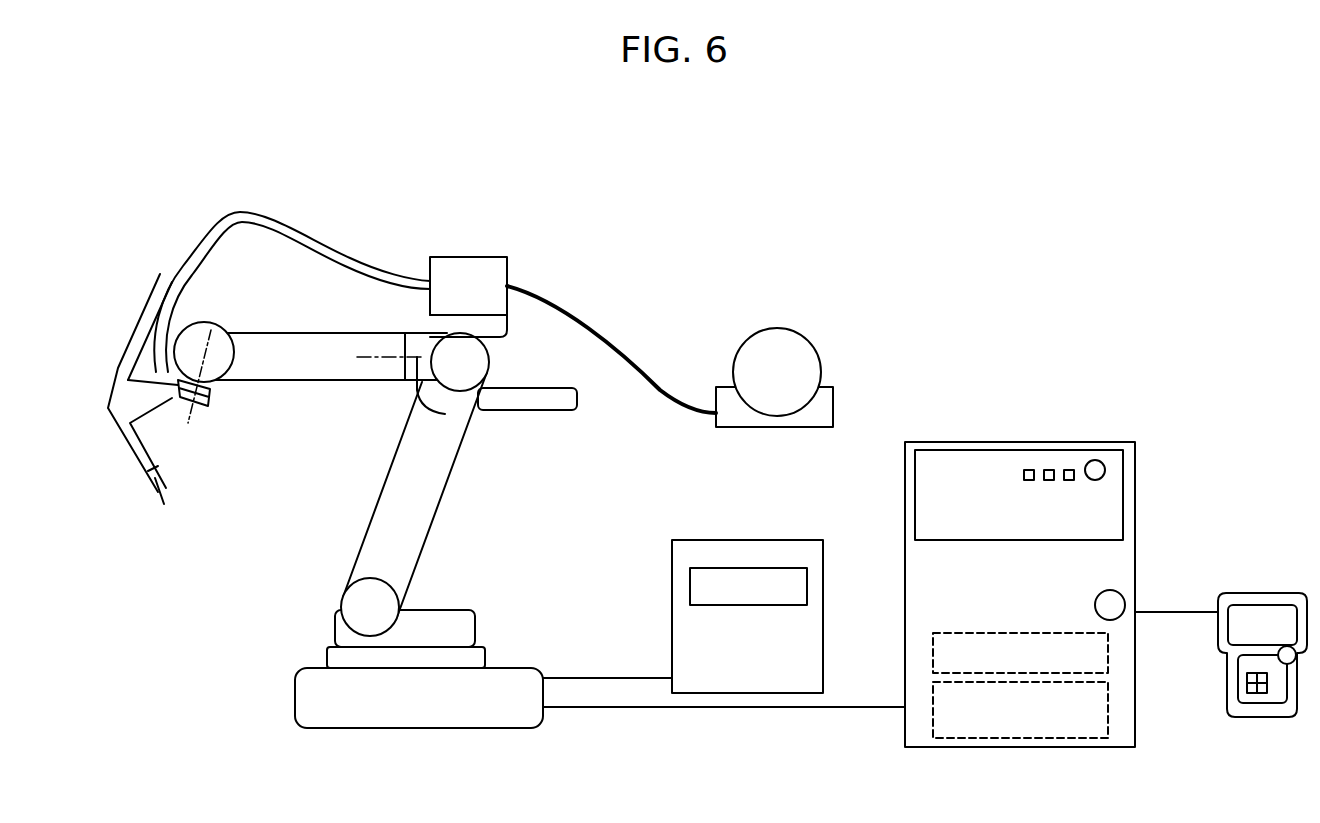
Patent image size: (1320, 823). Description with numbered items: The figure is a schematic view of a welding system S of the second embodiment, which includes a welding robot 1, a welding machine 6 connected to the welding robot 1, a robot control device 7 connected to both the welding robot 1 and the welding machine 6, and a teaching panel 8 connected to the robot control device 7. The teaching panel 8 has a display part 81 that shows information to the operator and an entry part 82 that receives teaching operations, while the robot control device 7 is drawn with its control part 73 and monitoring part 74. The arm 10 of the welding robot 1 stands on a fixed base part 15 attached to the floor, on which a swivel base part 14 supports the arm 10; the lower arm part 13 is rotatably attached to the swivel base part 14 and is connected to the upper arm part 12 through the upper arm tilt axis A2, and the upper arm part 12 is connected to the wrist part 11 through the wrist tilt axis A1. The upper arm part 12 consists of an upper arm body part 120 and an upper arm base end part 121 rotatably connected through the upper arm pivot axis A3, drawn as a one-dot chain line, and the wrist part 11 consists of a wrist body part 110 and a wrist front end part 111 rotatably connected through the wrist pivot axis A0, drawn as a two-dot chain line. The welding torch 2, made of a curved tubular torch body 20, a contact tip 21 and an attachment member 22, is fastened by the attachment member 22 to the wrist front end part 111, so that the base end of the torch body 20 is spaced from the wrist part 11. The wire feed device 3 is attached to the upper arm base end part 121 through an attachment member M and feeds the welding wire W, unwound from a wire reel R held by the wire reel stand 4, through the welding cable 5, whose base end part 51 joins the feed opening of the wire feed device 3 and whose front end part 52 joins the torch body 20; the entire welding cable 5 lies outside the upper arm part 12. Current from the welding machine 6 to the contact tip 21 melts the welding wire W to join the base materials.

The welding system S is at (165, 172).
The welding robot 1 is at (198, 578).
The welding torch 2 is at (99, 457).
The wire feed device 3 is at (483, 256).
The wire reel stand 4 is at (715, 374).
The welding cable 5 is at (282, 226).
The welding machine 6 is at (783, 540).
The robot control device 7 is at (1068, 418).
The teaching panel 8 is at (1253, 584).
The arm 10 is at (407, 410).
The wrist part 11 is at (228, 394).
The upper arm part 12 is at (326, 408).
The lower arm part 13 is at (415, 502).
The swivel base part 14 is at (460, 625).
The fixed base part 15 is at (516, 687).
The torch body 20 is at (118, 363).
The contact tip 21 is at (157, 472).
The attachment member 22 is at (140, 410).
The base end part 51 is at (406, 277).
The front end part 52 is at (137, 332).
The control part 73 is at (1108, 660).
The monitoring part 74 is at (1108, 725).
The display part 81 is at (1262, 617).
The entry part 82 is at (1275, 697).
The wrist body part 110 is at (158, 277).
The wrist front end part 111 is at (203, 408).
The upper arm body part 120 is at (277, 352).
The upper arm base end part 121 is at (445, 414).
The wrist pivot axis A0 is at (170, 372).
The wrist tilt axis A1 is at (212, 347).
The upper arm tilt axis A2 is at (452, 360).
The upper arm pivot axis A3 is at (398, 328).
The attachment member M is at (495, 326).
The wire reel R is at (783, 366).
The welding wire W is at (163, 493).